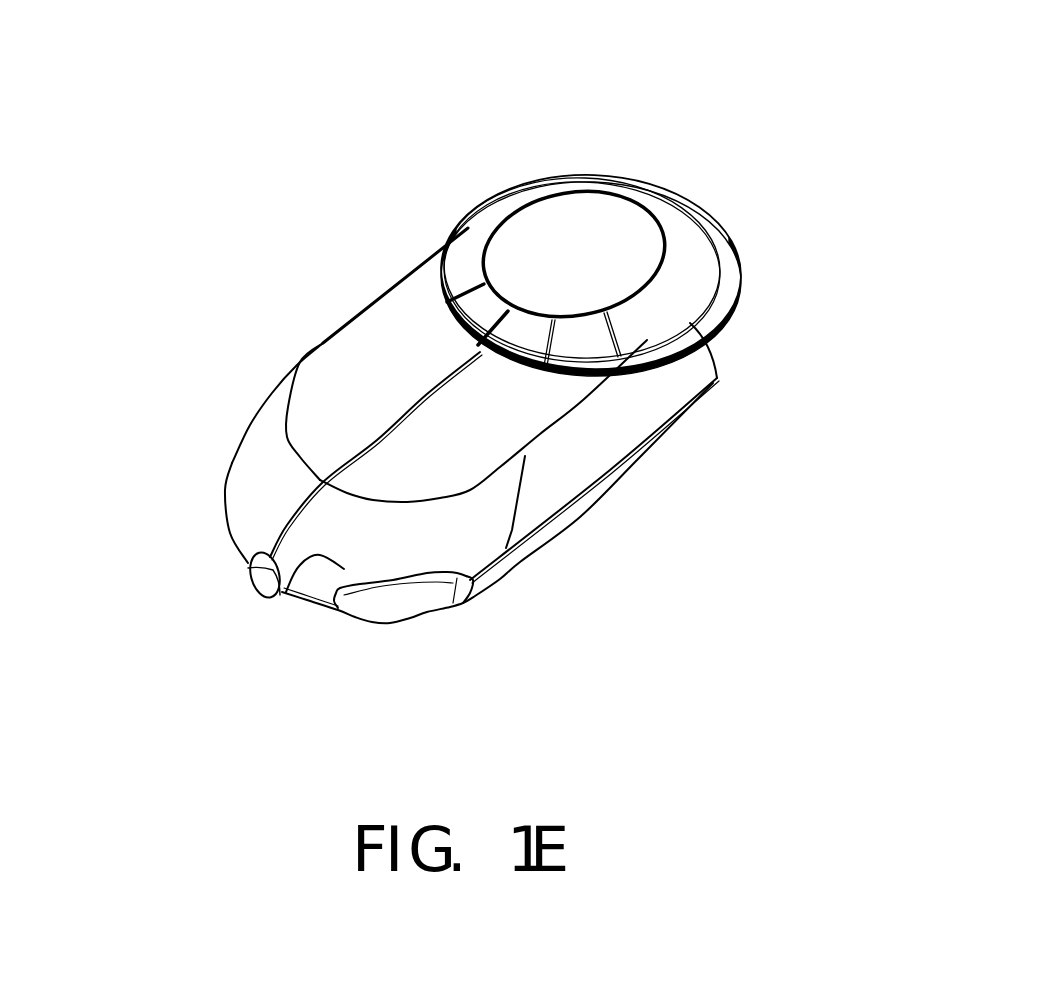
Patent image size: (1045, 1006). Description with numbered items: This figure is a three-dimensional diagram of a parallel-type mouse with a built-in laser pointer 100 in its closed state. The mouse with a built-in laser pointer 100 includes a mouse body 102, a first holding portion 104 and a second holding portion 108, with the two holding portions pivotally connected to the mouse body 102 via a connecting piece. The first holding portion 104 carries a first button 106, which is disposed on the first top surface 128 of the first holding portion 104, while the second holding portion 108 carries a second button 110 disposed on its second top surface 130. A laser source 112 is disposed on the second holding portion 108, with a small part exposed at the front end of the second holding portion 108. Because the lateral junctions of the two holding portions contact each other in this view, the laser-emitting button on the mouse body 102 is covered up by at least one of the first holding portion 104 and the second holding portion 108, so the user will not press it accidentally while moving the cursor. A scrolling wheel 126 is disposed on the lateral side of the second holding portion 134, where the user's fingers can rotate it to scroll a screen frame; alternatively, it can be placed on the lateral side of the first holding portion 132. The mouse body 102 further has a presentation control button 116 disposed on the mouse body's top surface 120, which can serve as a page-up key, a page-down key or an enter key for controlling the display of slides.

The mouse with a built-in laser pointer 100 is at (925, 57).
The mouse body 102 is at (557, 170).
The first holding portion 104 is at (370, 297).
The first button 106 is at (337, 357).
The second holding portion 108 is at (692, 417).
The second button 110 is at (493, 435).
The laser source 112 is at (263, 583).
The presentation control button 116 is at (473, 307).
The mouse body's top surface 120 is at (658, 205).
The scrolling wheel 126 is at (403, 607).
The first top surface 128 is at (250, 493).
The second top surface 130 is at (291, 594).
The lateral side of the first holding portion 132 is at (240, 425).
The lateral side of the second holding portion 134 is at (557, 525).